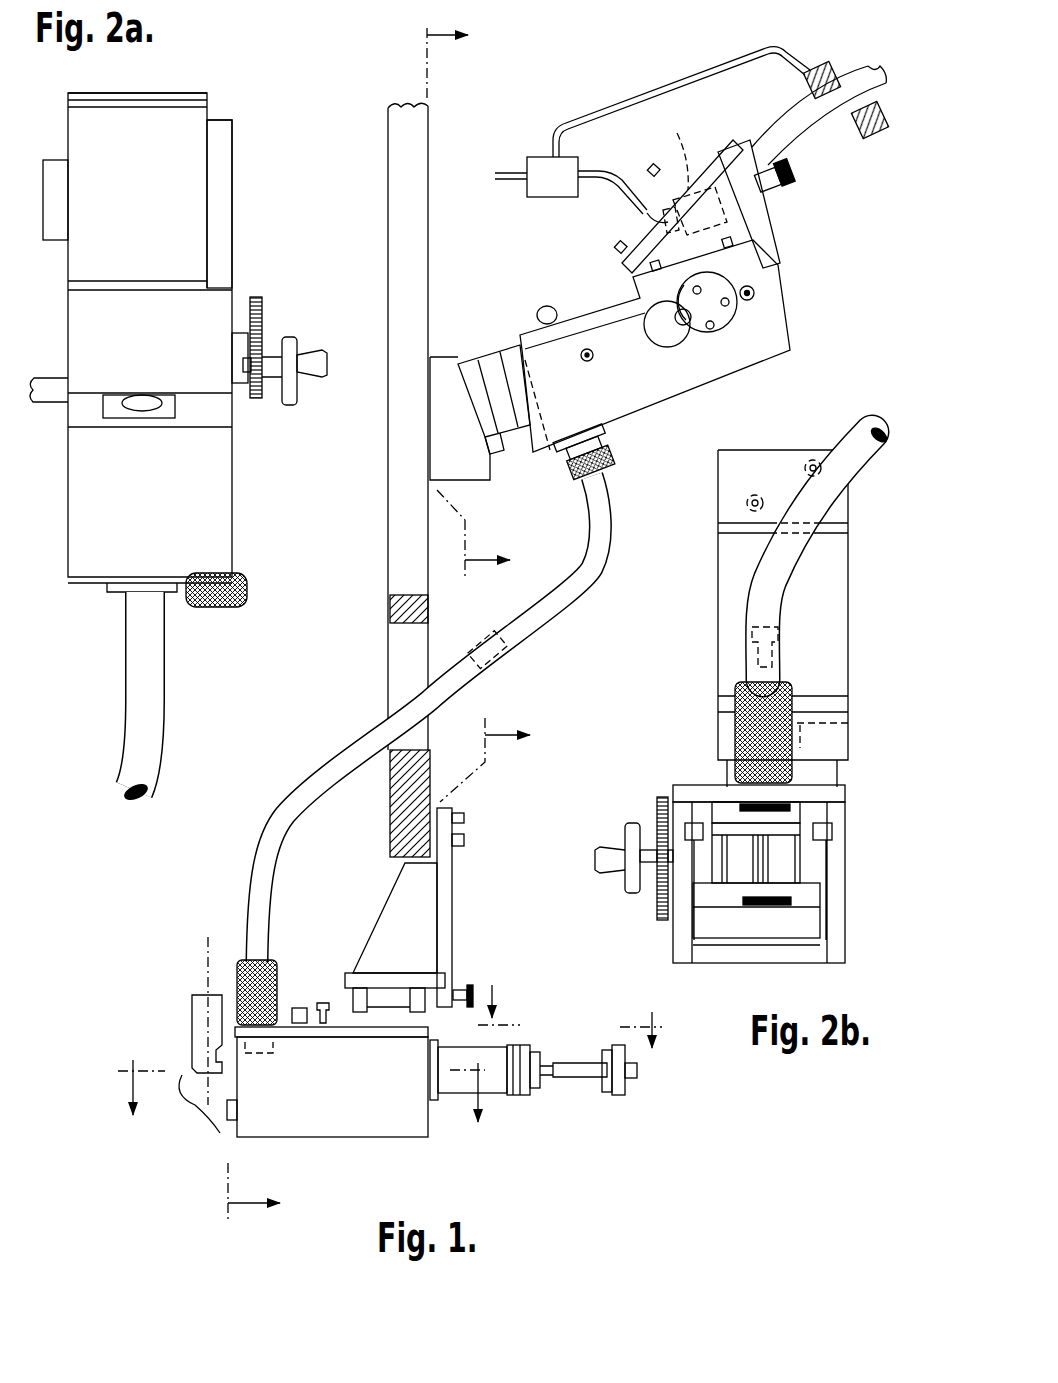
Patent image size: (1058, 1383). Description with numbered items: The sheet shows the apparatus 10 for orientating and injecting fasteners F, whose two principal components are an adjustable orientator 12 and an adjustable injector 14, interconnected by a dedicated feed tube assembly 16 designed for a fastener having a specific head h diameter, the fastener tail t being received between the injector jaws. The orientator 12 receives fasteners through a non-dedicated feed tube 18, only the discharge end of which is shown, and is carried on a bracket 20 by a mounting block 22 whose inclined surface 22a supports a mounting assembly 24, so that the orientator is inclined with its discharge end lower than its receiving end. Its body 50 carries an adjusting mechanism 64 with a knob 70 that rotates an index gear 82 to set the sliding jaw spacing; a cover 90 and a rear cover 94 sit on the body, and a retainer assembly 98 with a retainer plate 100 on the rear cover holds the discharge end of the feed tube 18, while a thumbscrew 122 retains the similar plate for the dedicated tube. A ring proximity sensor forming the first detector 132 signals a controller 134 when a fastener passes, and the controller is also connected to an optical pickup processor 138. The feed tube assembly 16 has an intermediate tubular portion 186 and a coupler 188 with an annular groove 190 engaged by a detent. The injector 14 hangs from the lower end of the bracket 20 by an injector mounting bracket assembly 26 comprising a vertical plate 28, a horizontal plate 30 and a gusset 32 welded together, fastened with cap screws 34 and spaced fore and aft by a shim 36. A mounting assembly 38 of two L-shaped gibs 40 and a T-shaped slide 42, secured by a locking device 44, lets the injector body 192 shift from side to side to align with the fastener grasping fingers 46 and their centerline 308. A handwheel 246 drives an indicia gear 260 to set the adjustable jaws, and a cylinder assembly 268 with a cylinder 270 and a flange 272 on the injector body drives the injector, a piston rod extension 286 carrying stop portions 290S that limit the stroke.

In FIG. 1, the apparatus for orientating and injecting fasteners 10 is at (468, 621).
In FIG. 2A, the adjustable orientator 12 is at (178, 413).
In FIG. 1, the adjustable orientator 12 is at (659, 257).
In FIG. 2B, the adjustable orientator 12 is at (668, 425).
In FIG. 1, the adjustable injector 14 is at (633, 1090).
In FIG. 1, the dedicated feed tube assembly 16 is at (424, 1003).
In FIG. 1, the non-dedicated feed tube 18 is at (818, 143).
In FIG. 1, the bracket 20 is at (420, 240).
In FIG. 2A, the mounting block 22 is at (218, 507).
In FIG. 1, the inclined surface 22a is at (458, 362).
In FIG. 1, the mounting assembly 24 is at (472, 352).
In FIG. 1, the injector mounting bracket assembly 26 is at (405, 910).
In FIG. 2B, the injector mounting bracket assembly 26 is at (755, 588).
In FIG. 1, the vertical plate 28 is at (452, 890).
In FIG. 2B, the vertical plate 28 is at (775, 465).
In FIG. 1, the horizontal plate 30 is at (355, 985).
In FIG. 2B, the horizontal plate 30 is at (735, 700).
In FIG. 1, the gusset 32 is at (395, 882).
In FIG. 2B, the gusset 32 is at (722, 645).
In FIG. 1, the cap screw 34 is at (464, 840).
In FIG. 2B, the cap screw 34 is at (818, 460).
In FIG. 1, the shim 36 is at (395, 827).
In FIG. 2B, the shim 36 is at (735, 462).
In FIG. 1, the mounting assembly 38 is at (347, 1000).
In FIG. 1, the L-shaped gibs 40 is at (417, 975).
In FIG. 1, the T-shaped slide 42 is at (383, 1033).
In FIG. 1, the locking device 44 is at (463, 983).
In FIG. 2B, the locking device 44 is at (848, 725).
In FIG. 1, the fastener grasping fingers 46 is at (192, 1018).
In FIG. 1, the body 50 is at (770, 322).
In FIG. 2A, the adjusting mechanism 64 is at (258, 403).
In FIG. 2A, the knob 70 is at (290, 337).
In FIG. 1, the knob 70 is at (640, 348).
In FIG. 2A, the index gear 82 is at (259, 297).
In FIG. 1, the index gear 82 is at (700, 330).
In FIG. 2A, the cover 90 is at (195, 227).
In FIG. 1, the cover 90 is at (703, 153).
In FIG. 1, the rear cover 94 is at (758, 227).
In FIG. 2A, the retainer assembly 98 is at (213, 88).
In FIG. 1, the retainer assembly 98 is at (763, 122).
In FIG. 2A, the retainer plate 100 is at (163, 93).
In FIG. 1, the retainer plate 100 is at (750, 150).
In FIG. 2A, the thumbscrew 122 is at (248, 590).
In FIG. 1, the thumbscrew 122 is at (565, 478).
In FIG. 1, the first detector 132 is at (830, 66).
In FIG. 1, the controller 134 is at (540, 190).
In FIG. 1, the optical pickup processor 138 is at (683, 174).
In FIG. 1, the intermediate tubular portion 186 is at (347, 755).
In FIG. 1, the coupler 188 is at (265, 955).
In FIG. 1, the annular groove 190 is at (288, 1027).
In FIG. 2B, the annular groove 190 is at (845, 793).
In FIG. 1, the injector body 192 is at (437, 1112).
In FIG. 2B, the injector body 192 is at (850, 915).
In FIG. 2B, the handwheel 246 is at (632, 823).
In FIG. 2B, the indicia gear 260 is at (665, 918).
In FIG. 1, the cylinder assembly 268 is at (555, 995).
In FIG. 1, the cylinder 270 is at (498, 1087).
In FIG. 1, the flange 272 is at (440, 1108).
In FIG. 1, the piston rod extension 286 is at (572, 1073).
In FIG. 1, the stop portions 290S is at (593, 1053).
In FIG. 1, the centerline 308 is at (205, 955).
In FIG. 1, the fasteners F is at (503, 637).
In FIG. 2B, the fasteners F is at (767, 622).
In FIG. 1, the head h is at (500, 660).
In FIG. 2B, the head h is at (780, 632).
In FIG. 1, the tube t is at (482, 680).
In FIG. 2B, the tube t is at (777, 655).